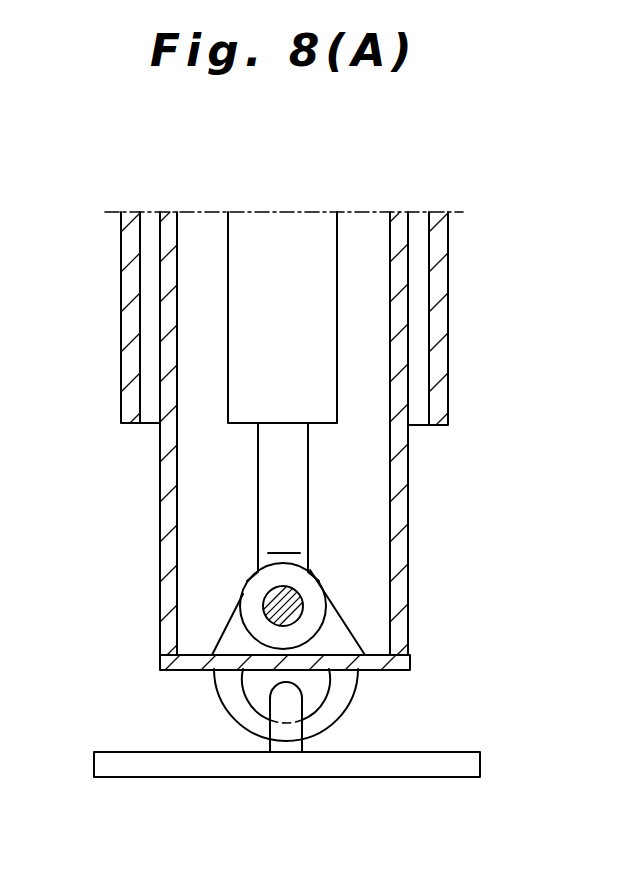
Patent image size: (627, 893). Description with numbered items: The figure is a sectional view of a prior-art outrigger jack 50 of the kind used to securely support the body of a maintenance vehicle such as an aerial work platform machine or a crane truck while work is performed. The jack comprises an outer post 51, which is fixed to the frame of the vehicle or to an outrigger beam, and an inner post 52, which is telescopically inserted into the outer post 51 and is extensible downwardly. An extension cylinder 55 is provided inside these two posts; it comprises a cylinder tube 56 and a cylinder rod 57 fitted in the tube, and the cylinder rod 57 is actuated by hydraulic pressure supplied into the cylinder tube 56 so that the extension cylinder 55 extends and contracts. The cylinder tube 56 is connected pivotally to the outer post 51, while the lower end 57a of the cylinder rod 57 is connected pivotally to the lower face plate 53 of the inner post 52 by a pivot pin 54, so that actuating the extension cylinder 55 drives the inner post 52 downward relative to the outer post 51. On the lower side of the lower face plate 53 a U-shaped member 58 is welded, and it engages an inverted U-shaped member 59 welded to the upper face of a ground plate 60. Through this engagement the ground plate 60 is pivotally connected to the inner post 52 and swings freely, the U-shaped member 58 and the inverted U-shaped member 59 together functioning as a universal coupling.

The outrigger jack 50 is at (478, 211).
The outer post 51 is at (450, 316).
The inner post 52 is at (410, 497).
The lower face plate 53 is at (404, 670).
The pivot pin 54 is at (303, 612).
The extension cylinder 55 is at (228, 393).
The cylinder tube 56 is at (291, 220).
The cylinder rod 57 is at (272, 487).
The lower end 57a is at (314, 594).
The U-shaped member 58 is at (343, 708).
The inverted U-shaped member 59 is at (278, 698).
The ground plate 60 is at (387, 752).